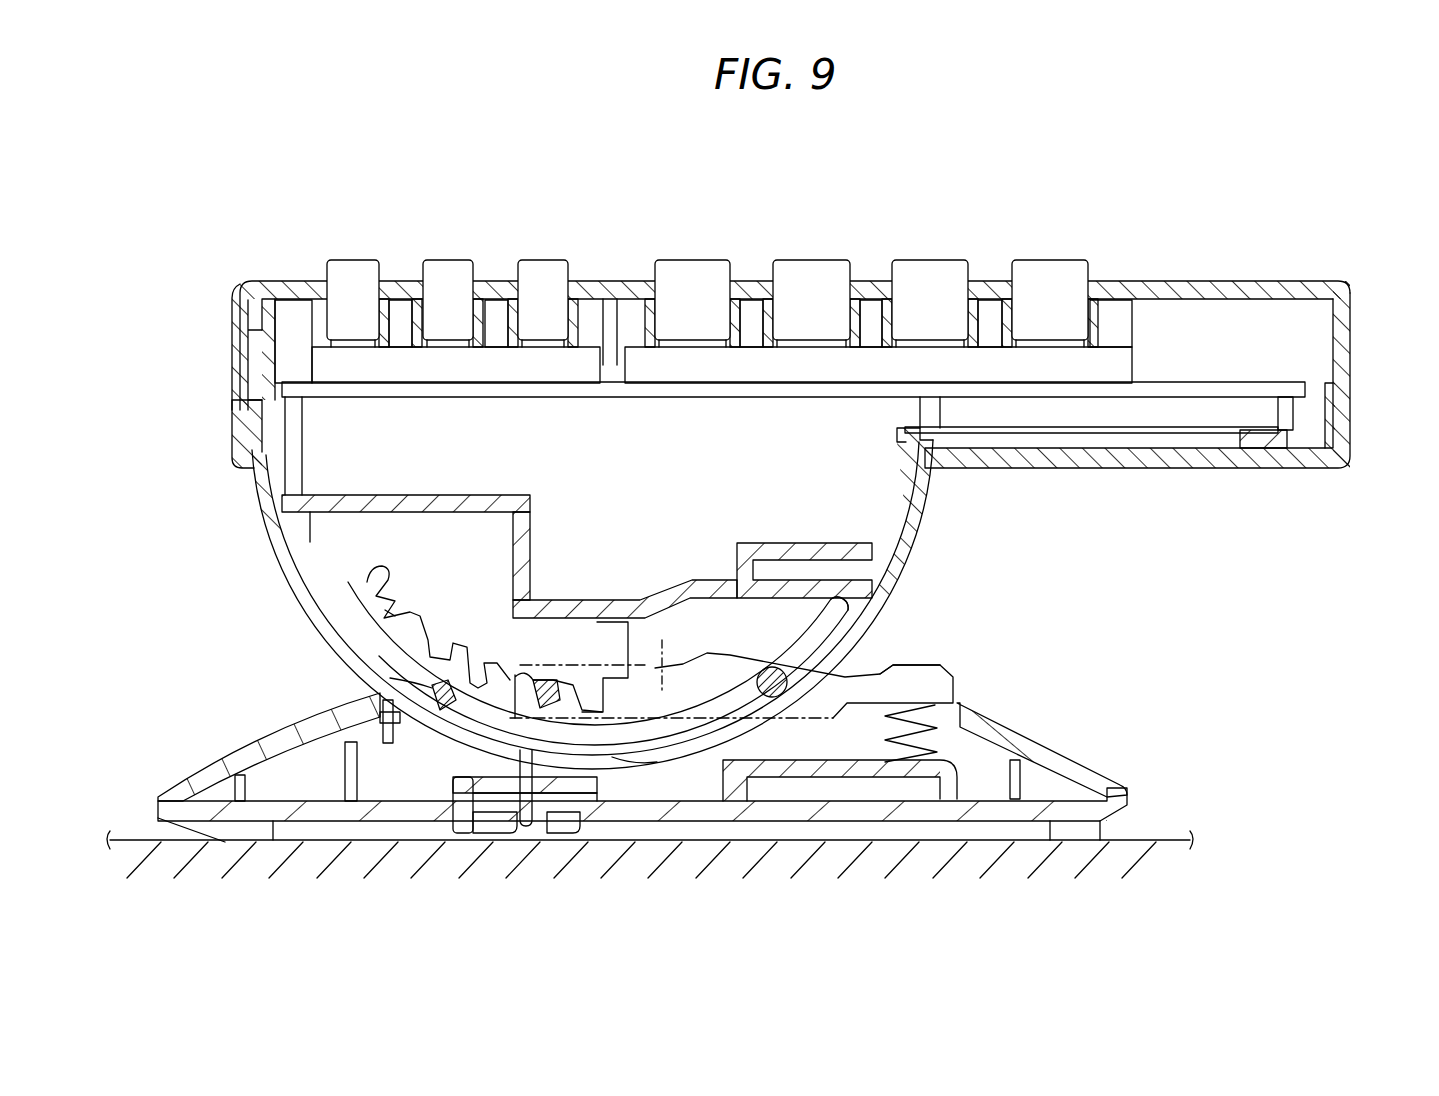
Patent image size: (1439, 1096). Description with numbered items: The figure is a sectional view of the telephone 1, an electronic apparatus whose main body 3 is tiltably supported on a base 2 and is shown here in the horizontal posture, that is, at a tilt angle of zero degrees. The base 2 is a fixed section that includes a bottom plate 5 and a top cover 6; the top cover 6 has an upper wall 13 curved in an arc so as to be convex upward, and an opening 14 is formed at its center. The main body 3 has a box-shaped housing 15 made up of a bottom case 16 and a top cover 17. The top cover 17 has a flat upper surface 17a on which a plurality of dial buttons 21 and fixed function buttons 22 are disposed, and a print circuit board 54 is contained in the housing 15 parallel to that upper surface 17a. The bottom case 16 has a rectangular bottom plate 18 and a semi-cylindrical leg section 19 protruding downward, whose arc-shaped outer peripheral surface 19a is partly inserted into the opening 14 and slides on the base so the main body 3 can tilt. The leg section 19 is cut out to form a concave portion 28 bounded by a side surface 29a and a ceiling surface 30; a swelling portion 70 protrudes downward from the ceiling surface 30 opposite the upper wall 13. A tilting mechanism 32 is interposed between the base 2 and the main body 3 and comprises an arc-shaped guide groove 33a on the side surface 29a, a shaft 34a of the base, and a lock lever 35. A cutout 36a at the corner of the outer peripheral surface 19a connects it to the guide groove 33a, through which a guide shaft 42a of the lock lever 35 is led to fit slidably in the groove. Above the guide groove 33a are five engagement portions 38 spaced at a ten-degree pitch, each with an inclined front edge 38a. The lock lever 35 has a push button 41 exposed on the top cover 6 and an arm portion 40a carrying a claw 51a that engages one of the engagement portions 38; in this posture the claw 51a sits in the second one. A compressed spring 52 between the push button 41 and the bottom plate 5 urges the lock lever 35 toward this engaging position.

The telephone 1 is at (1287, 211).
The base 2 is at (646, 797).
The main body 3 is at (785, 371).
The bottom plate 5 is at (717, 810).
The top cover 6 is at (1076, 751).
The upper wall 13 is at (203, 770).
The opening 14 is at (385, 716).
The housing 15 is at (205, 376).
The bottom case 16 is at (222, 434).
The top cover 17 is at (238, 383).
The upper surface 17a is at (627, 281).
The bottom plate 18 is at (1313, 468).
The leg section 19 is at (264, 521).
The outer peripheral surface 19a is at (642, 777).
The dial buttons 21 is at (1023, 258).
The fixed function buttons 22 is at (438, 259).
The concave portion 28 is at (310, 566).
The side surface 29a is at (402, 550).
The ceiling surface 30 is at (469, 510).
The tilting mechanism 32 is at (840, 629).
The guide groove 33a is at (721, 700).
The shaft 34a is at (430, 690).
The lock lever 35 is at (855, 662).
The cutout 36a is at (514, 762).
The engagement portions 38 is at (478, 668).
The front edge 38a is at (387, 624).
The arm portion 40a is at (637, 664).
The push button 41 is at (960, 682).
The guide shaft 42a is at (776, 668).
The claw 51a is at (540, 680).
The compressed spring 52 is at (898, 722).
The print circuit board 54 is at (710, 383).
The swelling portion 70 is at (568, 600).